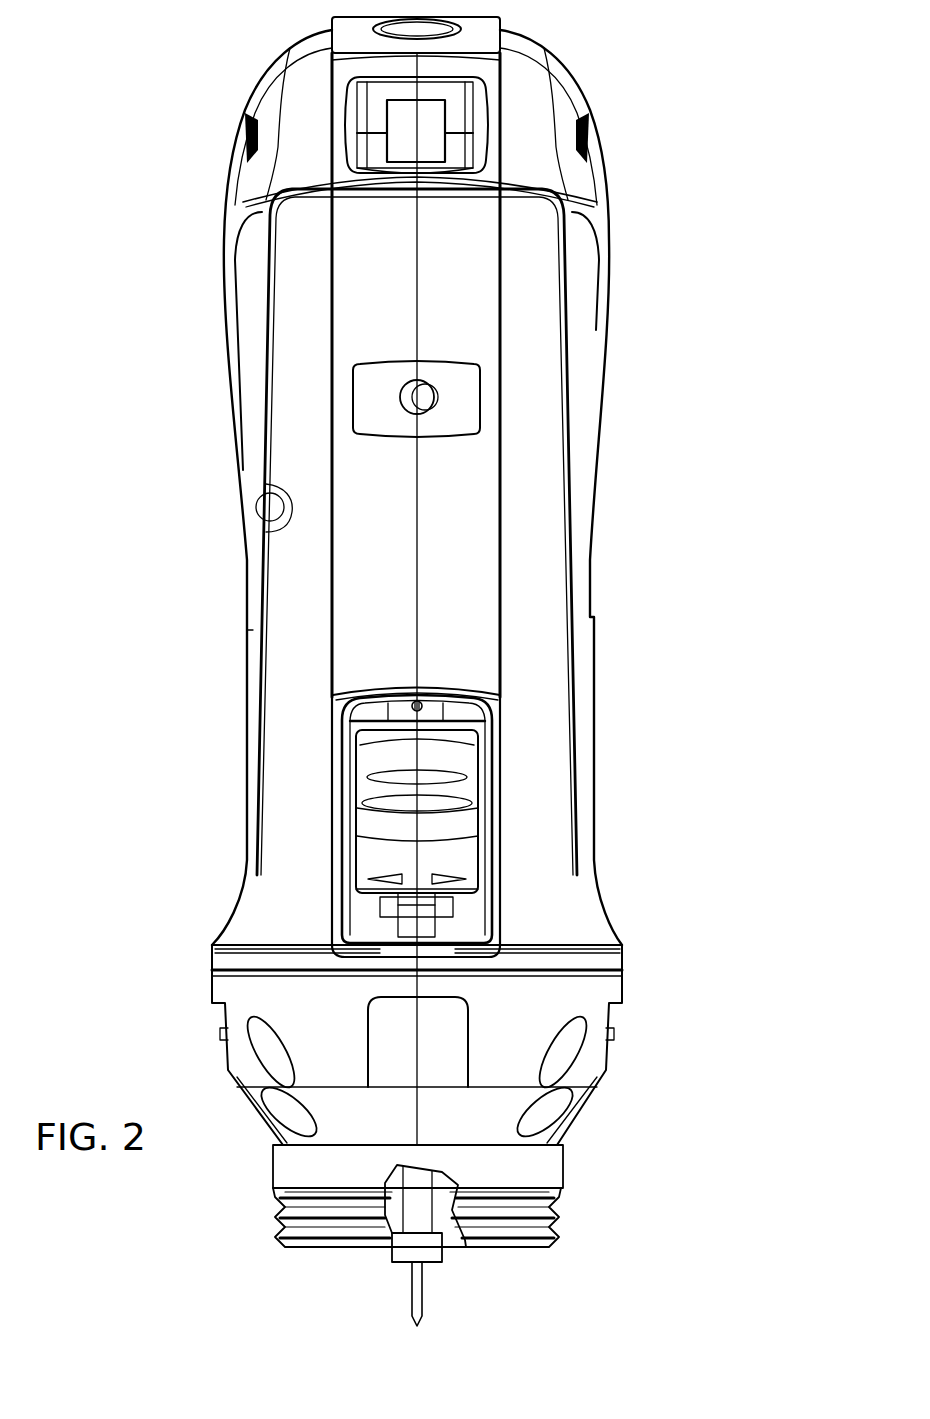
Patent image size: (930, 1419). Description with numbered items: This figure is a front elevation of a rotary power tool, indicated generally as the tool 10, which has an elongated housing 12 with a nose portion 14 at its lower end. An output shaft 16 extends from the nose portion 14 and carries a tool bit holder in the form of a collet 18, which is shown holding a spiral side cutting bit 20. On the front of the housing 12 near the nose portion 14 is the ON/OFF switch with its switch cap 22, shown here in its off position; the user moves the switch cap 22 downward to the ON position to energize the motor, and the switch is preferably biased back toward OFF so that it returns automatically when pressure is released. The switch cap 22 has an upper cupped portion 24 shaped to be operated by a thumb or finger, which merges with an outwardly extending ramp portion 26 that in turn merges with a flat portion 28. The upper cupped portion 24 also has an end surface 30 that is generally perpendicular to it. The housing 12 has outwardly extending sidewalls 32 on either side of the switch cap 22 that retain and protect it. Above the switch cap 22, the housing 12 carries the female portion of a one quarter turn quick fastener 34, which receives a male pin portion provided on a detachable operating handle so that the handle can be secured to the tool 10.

The rotary tool 10 is at (625, 492).
The elongated housing 12 is at (545, 655).
The nose portion 14 is at (530, 1168).
The output shaft 16 is at (420, 1205).
The collet 18 is at (405, 1256).
The spiral side cutting bit 20 is at (422, 1292).
The switch cap 22 is at (498, 788).
The upper cupped portion 24 is at (380, 757).
The ramp portion 26 is at (405, 826).
The flat portion 28 is at (385, 861).
The end surface 30 is at (405, 730).
The sidewalls 32 is at (493, 850).
The one quarter turn quick fastener 34 is at (438, 405).